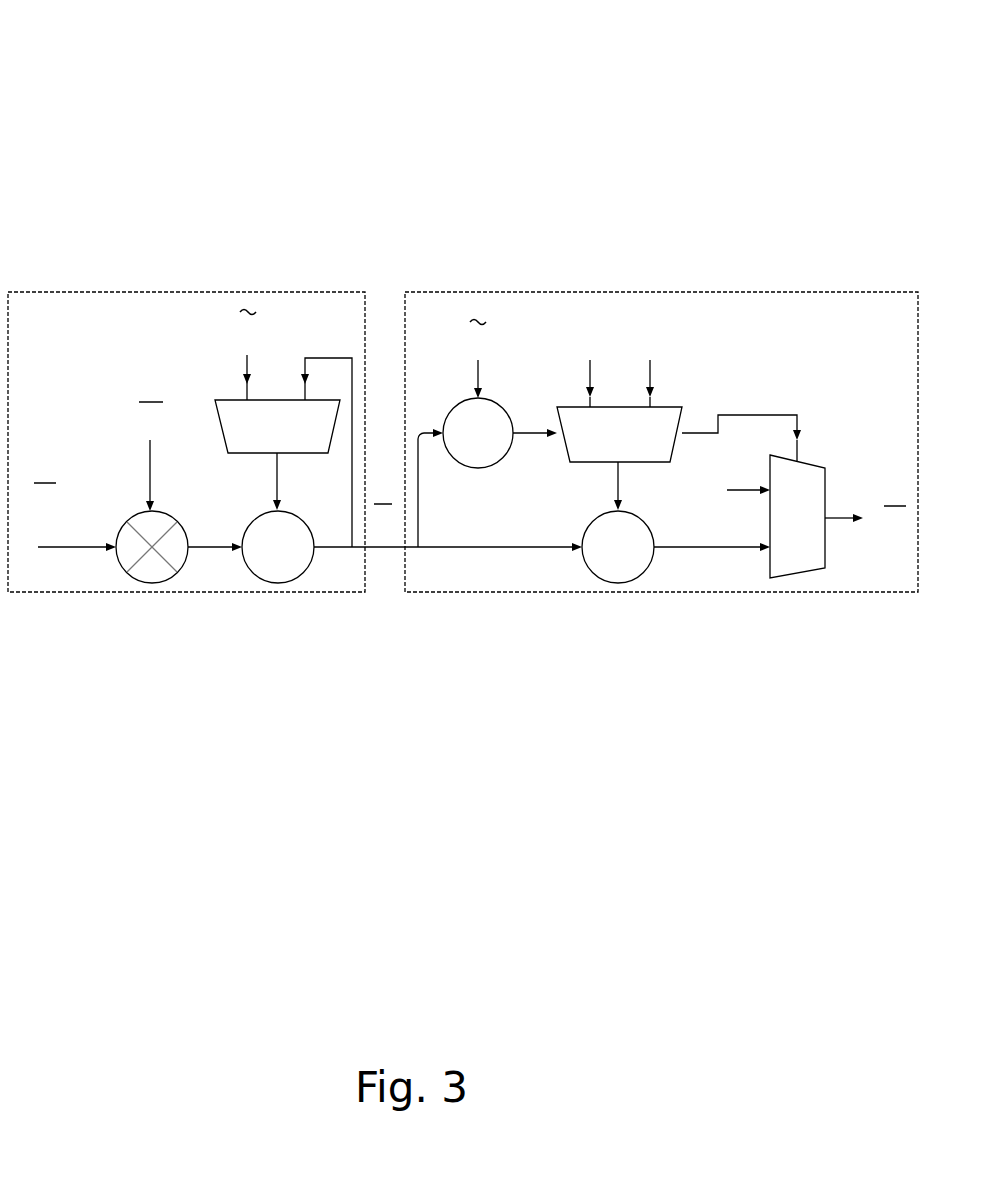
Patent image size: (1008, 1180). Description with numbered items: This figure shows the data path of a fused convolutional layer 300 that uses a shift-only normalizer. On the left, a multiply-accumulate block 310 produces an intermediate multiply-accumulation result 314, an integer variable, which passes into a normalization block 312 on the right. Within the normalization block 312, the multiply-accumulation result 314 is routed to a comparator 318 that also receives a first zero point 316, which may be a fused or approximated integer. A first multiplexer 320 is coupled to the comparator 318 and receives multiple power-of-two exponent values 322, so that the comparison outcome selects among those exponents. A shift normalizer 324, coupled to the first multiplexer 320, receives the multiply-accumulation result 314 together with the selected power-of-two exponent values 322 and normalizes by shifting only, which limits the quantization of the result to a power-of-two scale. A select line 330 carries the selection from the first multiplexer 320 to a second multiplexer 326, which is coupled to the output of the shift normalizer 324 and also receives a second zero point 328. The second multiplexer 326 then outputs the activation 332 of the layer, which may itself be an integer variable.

The fused convolutional layer 300 is at (214, 93).
The multiply-accumulate (Mult-Acc) block 310 is at (222, 292).
The normalization block 312 is at (808, 292).
The multiply-accumulation result 314 is at (388, 553).
The first zero point 316 is at (466, 312).
The comparator 318 is at (488, 472).
The first multiplexer 320 is at (622, 407).
The power-of-two exponent values 322 is at (653, 323).
The shift normalizer 324 is at (621, 583).
The second multiplexer 326 is at (793, 565).
The second zero point 328 is at (707, 510).
The select signal line 330 is at (740, 412).
The activation 332 is at (897, 547).